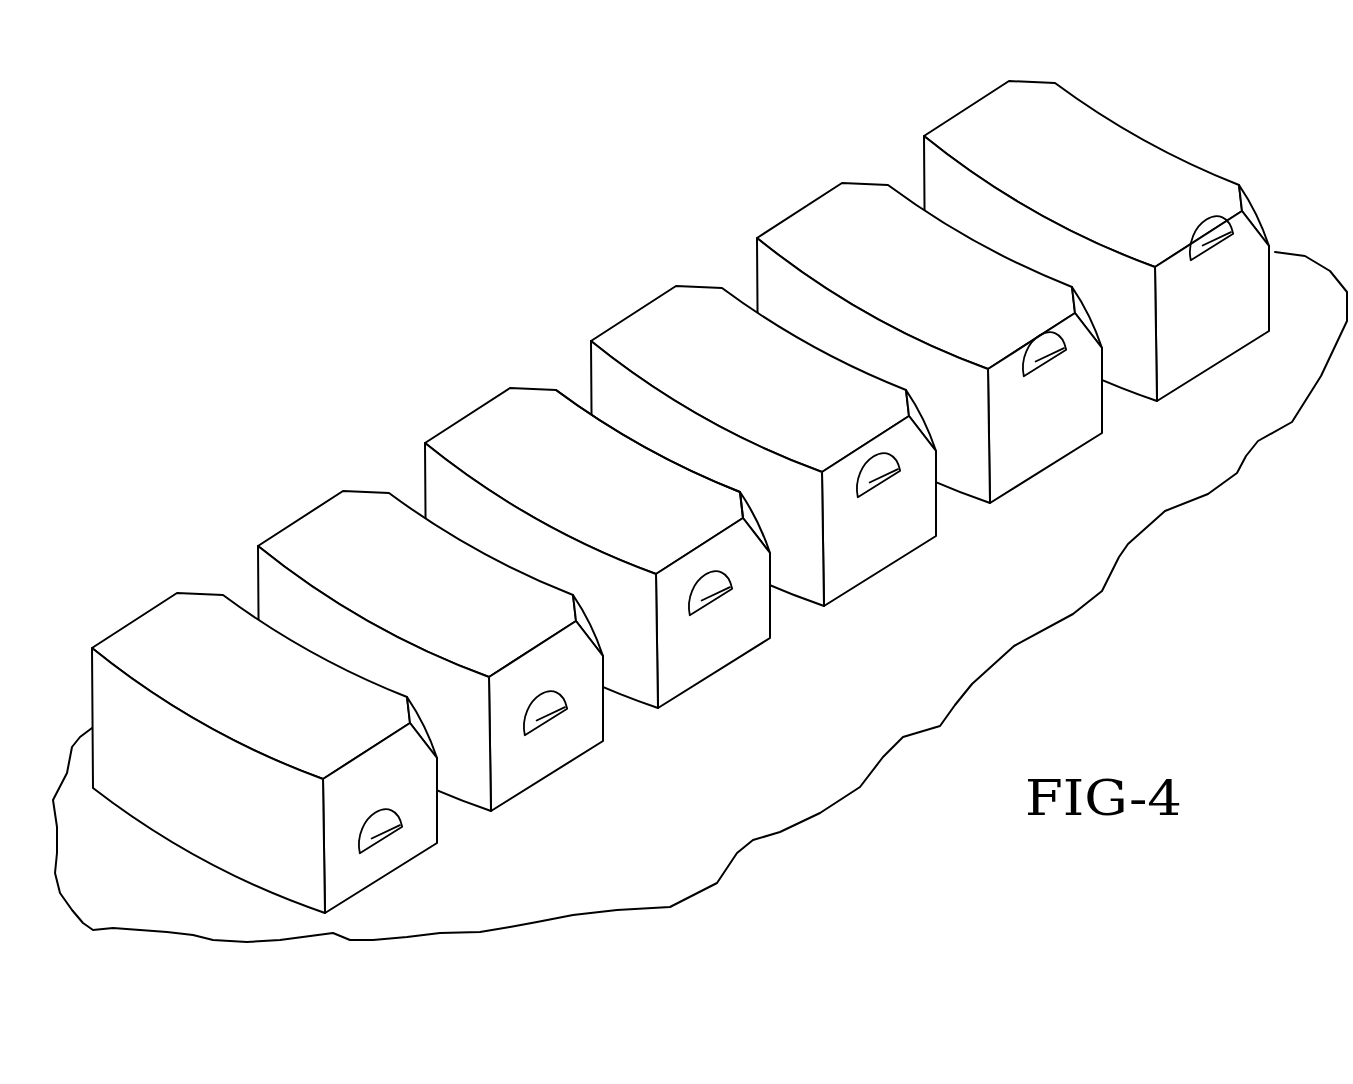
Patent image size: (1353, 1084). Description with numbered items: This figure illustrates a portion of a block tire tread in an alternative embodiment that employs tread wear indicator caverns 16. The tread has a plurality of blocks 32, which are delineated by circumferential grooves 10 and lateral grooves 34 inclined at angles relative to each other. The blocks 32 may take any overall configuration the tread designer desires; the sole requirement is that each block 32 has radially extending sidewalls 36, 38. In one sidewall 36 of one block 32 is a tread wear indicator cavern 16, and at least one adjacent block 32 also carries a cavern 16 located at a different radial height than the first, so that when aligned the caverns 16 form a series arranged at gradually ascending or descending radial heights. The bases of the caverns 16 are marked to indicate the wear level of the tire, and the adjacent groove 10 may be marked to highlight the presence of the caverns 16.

The circumferential groove 10 is at (1098, 509).
The tread wear indicator cavern 16 is at (388, 830).
The block 32 is at (495, 437).
The lateral groove 34 is at (578, 383).
The sidewall 36 is at (412, 790).
The sidewall 38 is at (142, 742).